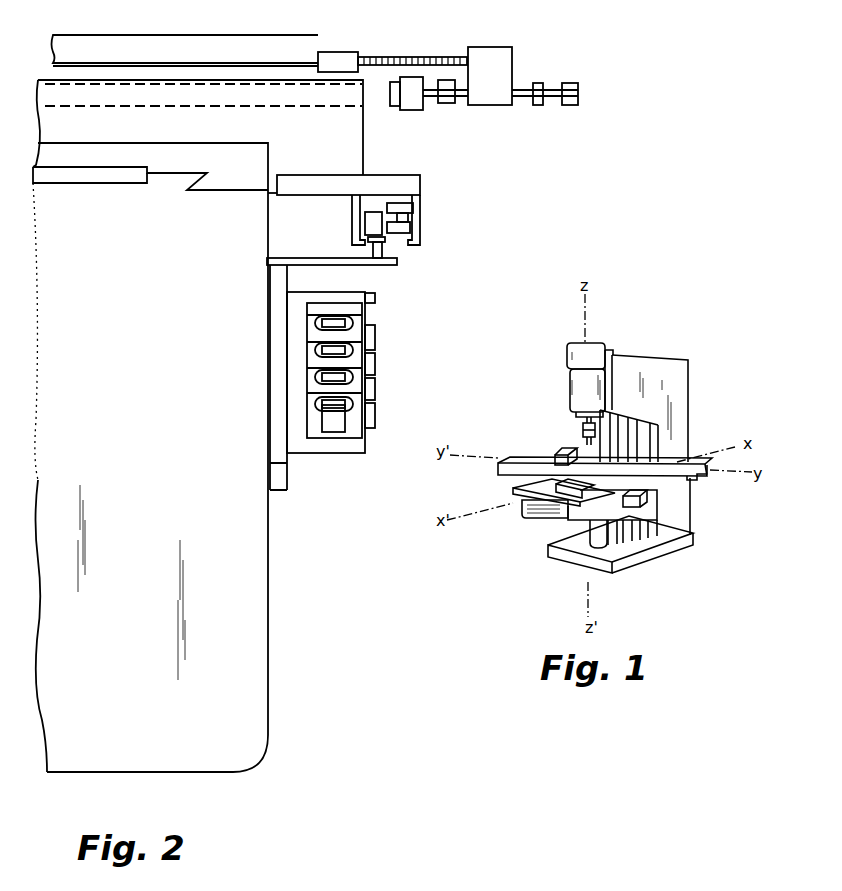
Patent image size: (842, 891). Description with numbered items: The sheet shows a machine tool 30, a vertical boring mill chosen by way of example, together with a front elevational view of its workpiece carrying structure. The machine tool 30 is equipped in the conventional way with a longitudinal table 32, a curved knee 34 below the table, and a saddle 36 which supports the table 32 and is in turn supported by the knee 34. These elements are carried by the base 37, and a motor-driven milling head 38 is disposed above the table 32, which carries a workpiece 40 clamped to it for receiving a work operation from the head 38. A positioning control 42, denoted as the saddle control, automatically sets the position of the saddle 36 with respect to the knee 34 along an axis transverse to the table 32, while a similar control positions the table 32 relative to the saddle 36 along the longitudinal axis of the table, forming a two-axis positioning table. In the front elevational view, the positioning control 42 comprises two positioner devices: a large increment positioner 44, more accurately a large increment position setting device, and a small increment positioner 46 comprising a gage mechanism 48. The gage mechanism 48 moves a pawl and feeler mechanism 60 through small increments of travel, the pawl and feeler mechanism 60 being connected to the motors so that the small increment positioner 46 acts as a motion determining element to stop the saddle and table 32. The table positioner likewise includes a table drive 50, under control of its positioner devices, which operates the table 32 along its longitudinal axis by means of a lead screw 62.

In FIG. 1, the machine tool 30 is at (690, 374).
In FIG. 2, the longitudinal table 32 is at (276, 36).
In FIG. 1, the longitudinal table 32 is at (523, 458).
In FIG. 2, the curved knee 34 is at (262, 577).
In FIG. 1, the curved knee 34 is at (537, 513).
In FIG. 2, the saddle 36 is at (102, 133).
In FIG. 1, the saddle 36 is at (528, 476).
In FIG. 1, the base 37 is at (557, 558).
In FIG. 1, the motor-driven milling head 38 is at (583, 432).
In FIG. 1, the workpiece 40 is at (563, 448).
In FIG. 2, the positioning control 42 is at (275, 345).
In FIG. 1, the positioning control 42 is at (647, 500).
In FIG. 2, the large increment positioner 44 is at (422, 222).
In FIG. 2, the small increment positioner 46 is at (367, 313).
In FIG. 2, the gage mechanism 48 is at (343, 427).
In FIG. 2, the table drive 50 is at (483, 106).
In FIG. 2, the pawl and feeler mechanism 60 is at (368, 222).
In FIG. 2, the lead screw 62 is at (407, 56).